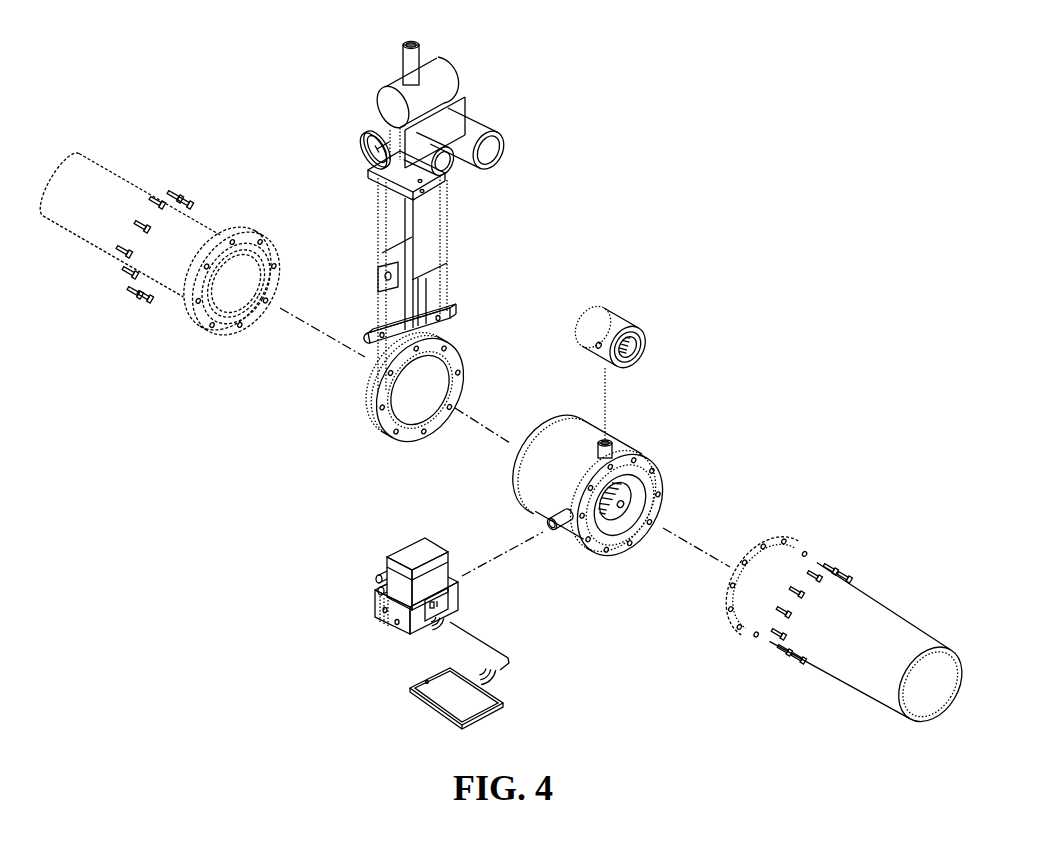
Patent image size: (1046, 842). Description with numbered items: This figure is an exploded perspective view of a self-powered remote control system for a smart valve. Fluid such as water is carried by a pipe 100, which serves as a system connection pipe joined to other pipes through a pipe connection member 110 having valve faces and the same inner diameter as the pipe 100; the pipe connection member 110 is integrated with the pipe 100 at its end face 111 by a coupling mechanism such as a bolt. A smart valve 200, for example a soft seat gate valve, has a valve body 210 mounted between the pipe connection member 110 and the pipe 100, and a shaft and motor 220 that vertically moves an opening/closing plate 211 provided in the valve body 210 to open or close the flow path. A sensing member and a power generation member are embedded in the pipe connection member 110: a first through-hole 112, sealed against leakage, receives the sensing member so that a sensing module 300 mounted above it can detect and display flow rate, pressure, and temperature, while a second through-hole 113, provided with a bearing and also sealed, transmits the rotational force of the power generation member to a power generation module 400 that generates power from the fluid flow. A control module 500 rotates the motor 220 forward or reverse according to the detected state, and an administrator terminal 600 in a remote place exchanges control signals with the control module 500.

The pipe 100 is at (873, 620).
The pipe connection member 110 is at (672, 468).
The end face 111 is at (613, 550).
The first through-hole 112 is at (618, 447).
The second through-hole 113 is at (562, 530).
The smart valve 200 is at (466, 231).
The valve body 210 is at (350, 404).
The opening/closing plate 211 is at (427, 375).
The shaft and motor 220 is at (440, 82).
The sensing module 300 is at (636, 309).
The power generation module 400 is at (407, 547).
The control module 500 is at (402, 625).
The administrator terminal 600 is at (397, 710).